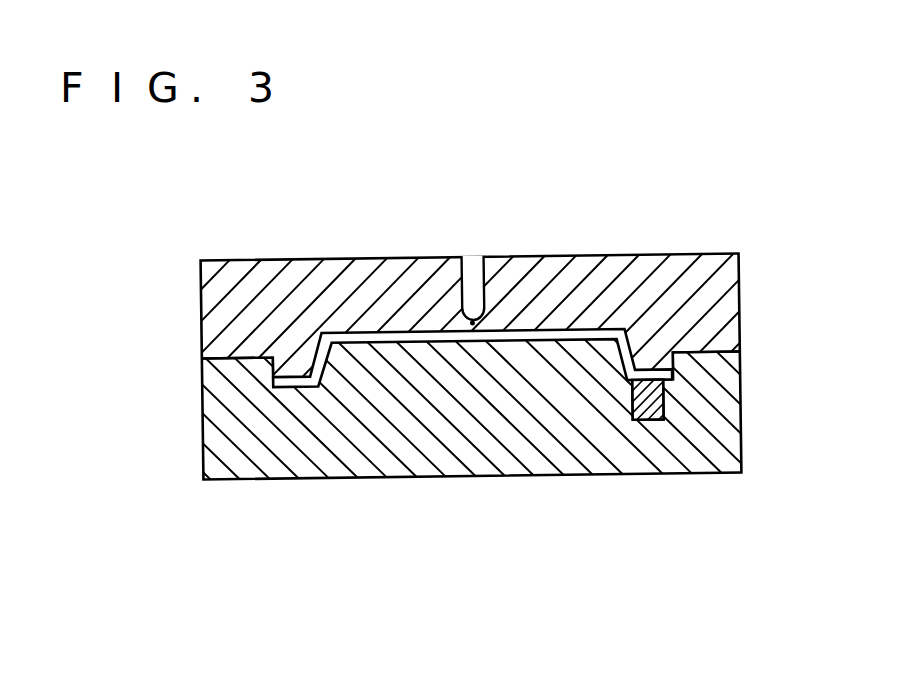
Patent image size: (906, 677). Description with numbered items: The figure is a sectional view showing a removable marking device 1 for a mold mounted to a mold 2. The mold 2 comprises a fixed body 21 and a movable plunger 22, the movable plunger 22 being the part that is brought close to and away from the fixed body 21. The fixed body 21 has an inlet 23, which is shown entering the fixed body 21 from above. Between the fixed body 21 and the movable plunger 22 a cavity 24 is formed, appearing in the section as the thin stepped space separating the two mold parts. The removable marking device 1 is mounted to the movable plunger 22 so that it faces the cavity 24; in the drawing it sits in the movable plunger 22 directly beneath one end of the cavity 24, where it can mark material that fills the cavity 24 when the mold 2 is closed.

The removable marking device 1 is at (645, 415).
The mold 2 is at (741, 283).
The fixed body 21 is at (703, 267).
The movable plunger 22 is at (740, 424).
The inlet 23 is at (473, 270).
The cavity 24 is at (578, 332).